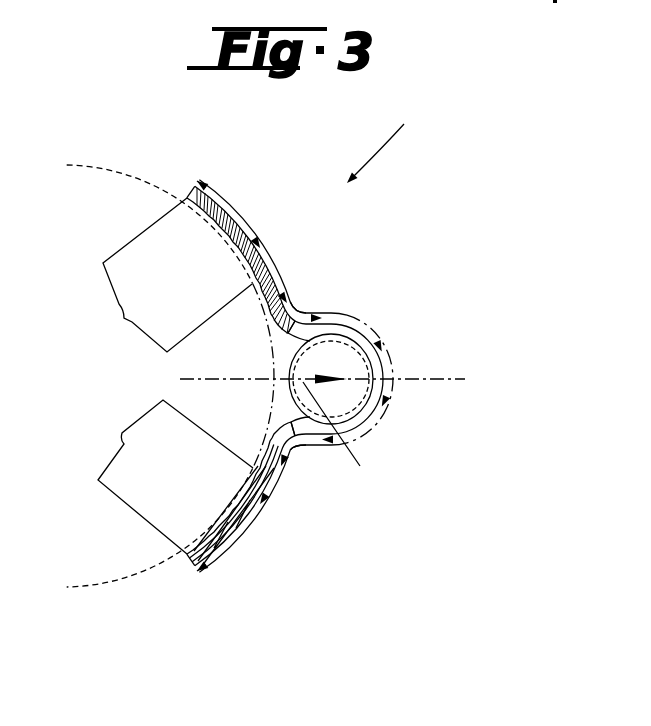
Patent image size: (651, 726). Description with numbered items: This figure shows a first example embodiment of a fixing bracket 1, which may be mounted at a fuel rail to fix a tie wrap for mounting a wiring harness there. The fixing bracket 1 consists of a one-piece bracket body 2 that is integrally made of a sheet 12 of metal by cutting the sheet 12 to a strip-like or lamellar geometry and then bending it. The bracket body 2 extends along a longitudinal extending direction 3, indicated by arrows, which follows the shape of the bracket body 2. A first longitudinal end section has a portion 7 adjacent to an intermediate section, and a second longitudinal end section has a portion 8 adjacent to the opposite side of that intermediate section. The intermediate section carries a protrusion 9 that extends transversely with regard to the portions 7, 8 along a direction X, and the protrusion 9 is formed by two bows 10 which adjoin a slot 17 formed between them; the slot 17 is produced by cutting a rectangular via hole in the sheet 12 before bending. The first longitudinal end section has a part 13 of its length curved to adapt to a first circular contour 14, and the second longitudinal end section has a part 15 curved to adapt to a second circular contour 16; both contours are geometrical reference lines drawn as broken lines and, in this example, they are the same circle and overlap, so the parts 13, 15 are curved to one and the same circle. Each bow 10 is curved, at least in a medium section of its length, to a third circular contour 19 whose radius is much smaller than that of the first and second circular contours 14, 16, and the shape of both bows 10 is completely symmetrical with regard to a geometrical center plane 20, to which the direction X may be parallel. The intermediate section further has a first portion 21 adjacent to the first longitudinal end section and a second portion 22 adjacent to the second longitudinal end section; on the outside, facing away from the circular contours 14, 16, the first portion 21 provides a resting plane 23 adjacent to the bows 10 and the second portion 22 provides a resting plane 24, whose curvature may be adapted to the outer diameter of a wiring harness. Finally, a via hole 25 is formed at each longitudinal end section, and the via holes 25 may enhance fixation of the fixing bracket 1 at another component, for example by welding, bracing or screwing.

The fixing bracket 1 is at (383, 136).
The bracket body 2 is at (337, 321).
The longitudinal extending direction 3 is at (247, 226).
The portion 7 is at (262, 285).
The portion 8 is at (252, 472).
The protrusion 9 is at (362, 340).
The bows 10 is at (390, 379).
The sheet 12 is at (251, 498).
The part 13 is at (122, 318).
The first circular contour 14 is at (117, 167).
The part 15 is at (122, 438).
The second circular contour 16 is at (113, 582).
The slot 17 is at (367, 425).
The third circular contour 19 is at (293, 393).
The geometrical center plane 20 is at (452, 379).
The first portion 21 is at (286, 330).
The second portion 22 is at (287, 432).
The resting plane 23 is at (283, 297).
The resting plane 24 is at (296, 447).
The via hole 25 is at (221, 224).
The direction X is at (340, 446).